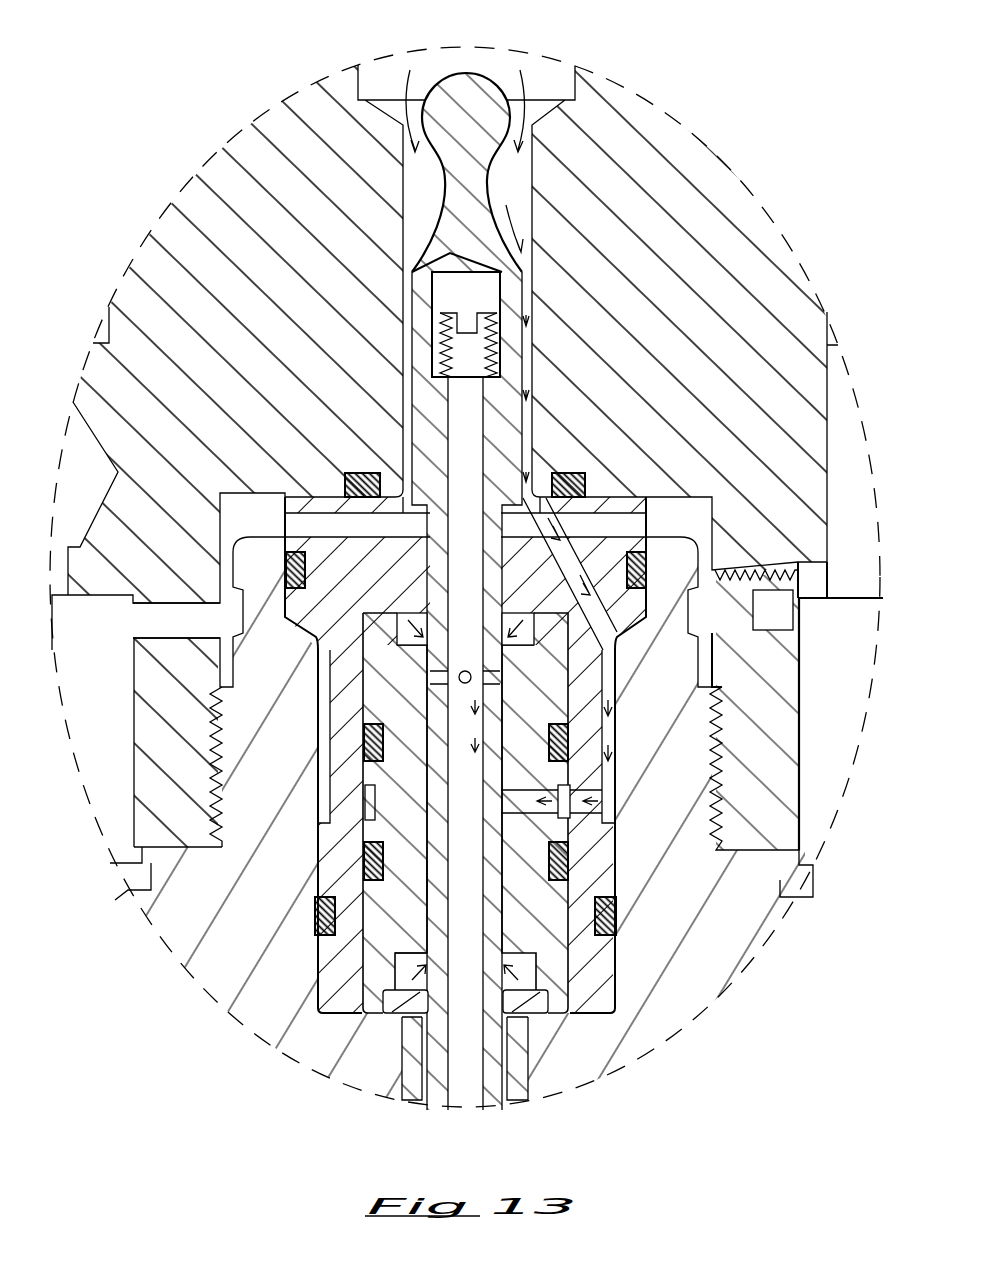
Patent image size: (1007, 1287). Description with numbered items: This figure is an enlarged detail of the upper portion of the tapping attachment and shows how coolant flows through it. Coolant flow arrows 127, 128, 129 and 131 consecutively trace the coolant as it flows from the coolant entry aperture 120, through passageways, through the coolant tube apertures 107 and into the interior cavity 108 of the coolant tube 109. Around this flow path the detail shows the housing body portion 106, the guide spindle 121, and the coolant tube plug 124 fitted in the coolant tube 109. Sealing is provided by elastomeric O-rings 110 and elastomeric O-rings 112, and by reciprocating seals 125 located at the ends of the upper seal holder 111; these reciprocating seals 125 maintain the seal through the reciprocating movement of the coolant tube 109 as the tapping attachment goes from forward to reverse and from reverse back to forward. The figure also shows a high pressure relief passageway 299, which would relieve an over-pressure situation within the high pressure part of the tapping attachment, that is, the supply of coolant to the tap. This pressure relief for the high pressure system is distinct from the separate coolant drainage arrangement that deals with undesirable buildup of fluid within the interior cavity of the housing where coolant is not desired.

The housing body portion 106 is at (284, 713).
The coolant tube apertures 107 is at (445, 650).
The interior cavity 108 is at (465, 925).
The coolant tube 109 is at (427, 860).
The elastomeric O-rings 110 is at (362, 473).
The upper seal holder 111 is at (366, 582).
The elastomeric O-rings 112 is at (552, 727).
The coolant entry aperture 120 is at (488, 60).
The guide spindle 121 is at (520, 1097).
The coolant tube plug 124 is at (470, 352).
The reciprocating seals 125 is at (392, 616).
The coolant flow arrow 127 is at (425, 80).
The coolant flow arrow 128 is at (565, 545).
The coolant flow arrow 129 is at (612, 792).
The coolant flow arrow 131 is at (540, 750).
The high pressure relief passageway 299 is at (170, 619).